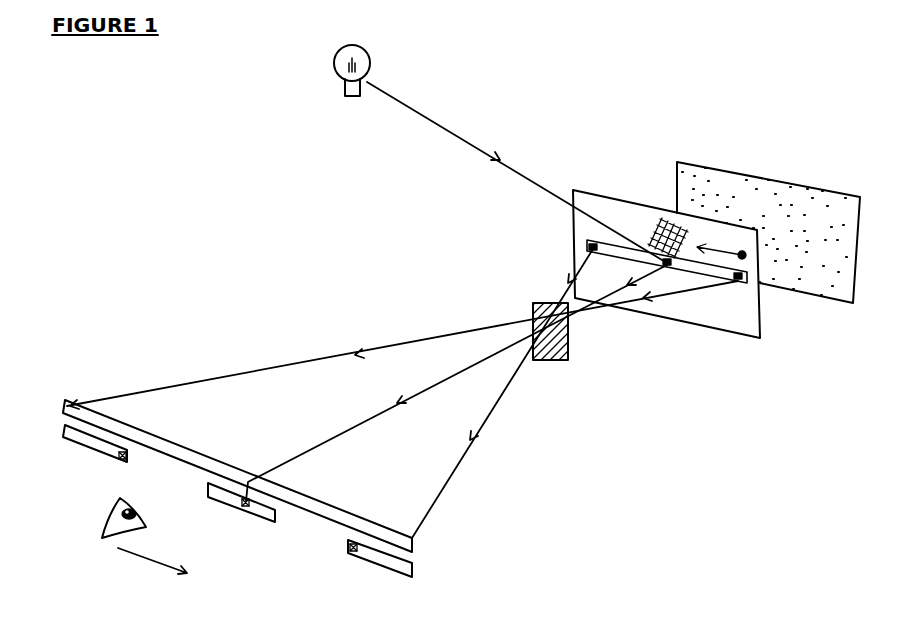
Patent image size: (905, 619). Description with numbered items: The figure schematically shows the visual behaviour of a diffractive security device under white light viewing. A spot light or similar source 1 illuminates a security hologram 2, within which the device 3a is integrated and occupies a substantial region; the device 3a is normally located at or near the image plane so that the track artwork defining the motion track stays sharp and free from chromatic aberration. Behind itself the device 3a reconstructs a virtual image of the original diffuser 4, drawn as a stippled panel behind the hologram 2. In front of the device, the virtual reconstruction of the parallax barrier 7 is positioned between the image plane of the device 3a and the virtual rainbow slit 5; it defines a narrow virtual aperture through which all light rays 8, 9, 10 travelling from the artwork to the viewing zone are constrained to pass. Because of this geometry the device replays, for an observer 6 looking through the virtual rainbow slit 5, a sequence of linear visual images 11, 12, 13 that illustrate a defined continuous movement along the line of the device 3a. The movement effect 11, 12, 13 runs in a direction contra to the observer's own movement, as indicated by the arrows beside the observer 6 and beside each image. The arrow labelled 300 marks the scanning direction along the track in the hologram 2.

The spot light source 1 is at (500, 154).
The security hologram 2 is at (689, 268).
The device 3a is at (731, 293).
The virtual image of the original diffuser 4 is at (803, 185).
The virtual rainbow slit 5 is at (423, 550).
The observer 6 is at (129, 536).
The parallax barrier 7 is at (560, 344).
The light ray 8 is at (402, 345).
The light ray 9 is at (456, 383).
The light ray 10 is at (502, 393).
The linear visual image 11 is at (113, 469).
The linear visual image 12 is at (238, 517).
The linear visual image 13 is at (348, 565).
The scanning direction 300 is at (713, 247).